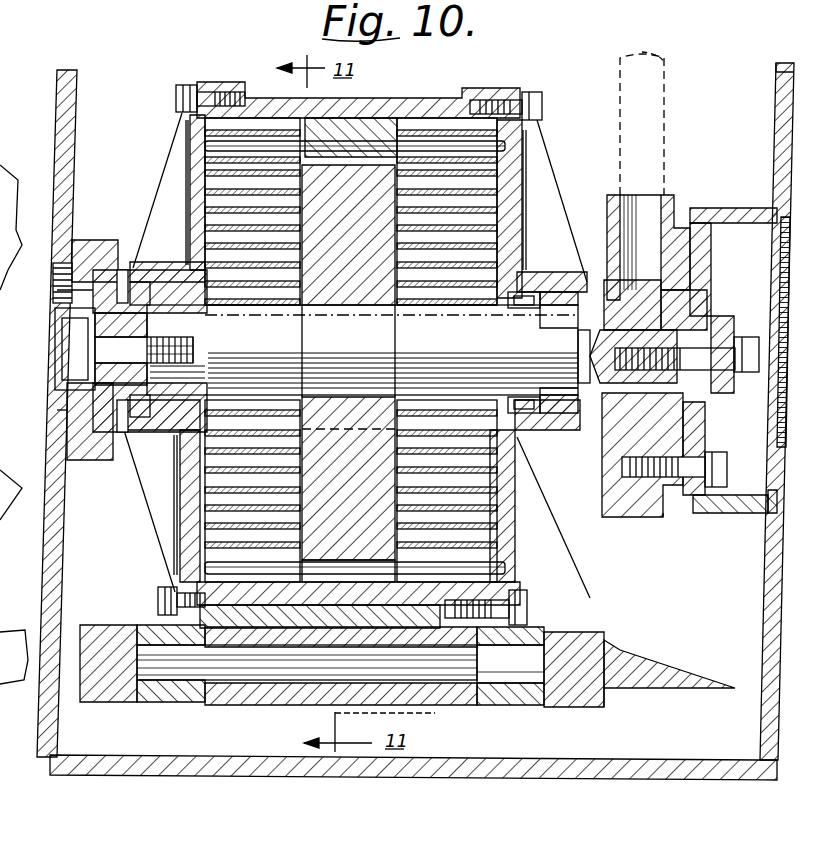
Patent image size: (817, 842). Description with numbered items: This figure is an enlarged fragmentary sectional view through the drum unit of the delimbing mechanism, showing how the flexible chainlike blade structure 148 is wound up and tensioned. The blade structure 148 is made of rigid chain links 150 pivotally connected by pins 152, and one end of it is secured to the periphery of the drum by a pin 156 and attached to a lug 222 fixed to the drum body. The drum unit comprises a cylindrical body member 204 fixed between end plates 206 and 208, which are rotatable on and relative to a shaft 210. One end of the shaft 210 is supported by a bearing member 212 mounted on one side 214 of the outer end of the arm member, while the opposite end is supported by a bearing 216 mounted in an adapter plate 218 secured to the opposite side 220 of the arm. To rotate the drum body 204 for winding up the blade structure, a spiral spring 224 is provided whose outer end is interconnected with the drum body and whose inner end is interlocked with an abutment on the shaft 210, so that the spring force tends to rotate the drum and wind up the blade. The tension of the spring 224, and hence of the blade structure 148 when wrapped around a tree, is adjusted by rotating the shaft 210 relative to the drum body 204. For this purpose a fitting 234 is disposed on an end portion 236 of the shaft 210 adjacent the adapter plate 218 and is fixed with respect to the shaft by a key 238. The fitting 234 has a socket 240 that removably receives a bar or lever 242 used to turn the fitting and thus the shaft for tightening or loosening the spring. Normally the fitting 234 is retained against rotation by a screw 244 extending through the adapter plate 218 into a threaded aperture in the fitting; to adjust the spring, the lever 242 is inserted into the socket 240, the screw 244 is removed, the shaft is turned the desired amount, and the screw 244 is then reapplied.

The chainlike blade structure 148 is at (586, 715).
The rigid chain links 150 is at (735, 657).
The pins 152 is at (596, 603).
The pin 156 is at (433, 660).
The cylindrical body member 204 is at (440, 103).
The end plate 206 is at (195, 172).
The end plate 208 is at (510, 165).
The shaft 210 is at (527, 332).
The bearing member 212 is at (103, 263).
The side 214 is at (57, 127).
The bearing 216 is at (758, 284).
The adapter plate 218 is at (722, 408).
The opposite side 220 is at (776, 573).
The lug 222 is at (263, 690).
The spiral spring 224 is at (190, 520).
The fitting 234 is at (634, 512).
The end portion 236 is at (700, 280).
The key 238 is at (606, 442).
The socket 240 is at (668, 198).
The bar or lever 242 is at (660, 146).
The screw 244 is at (672, 505).